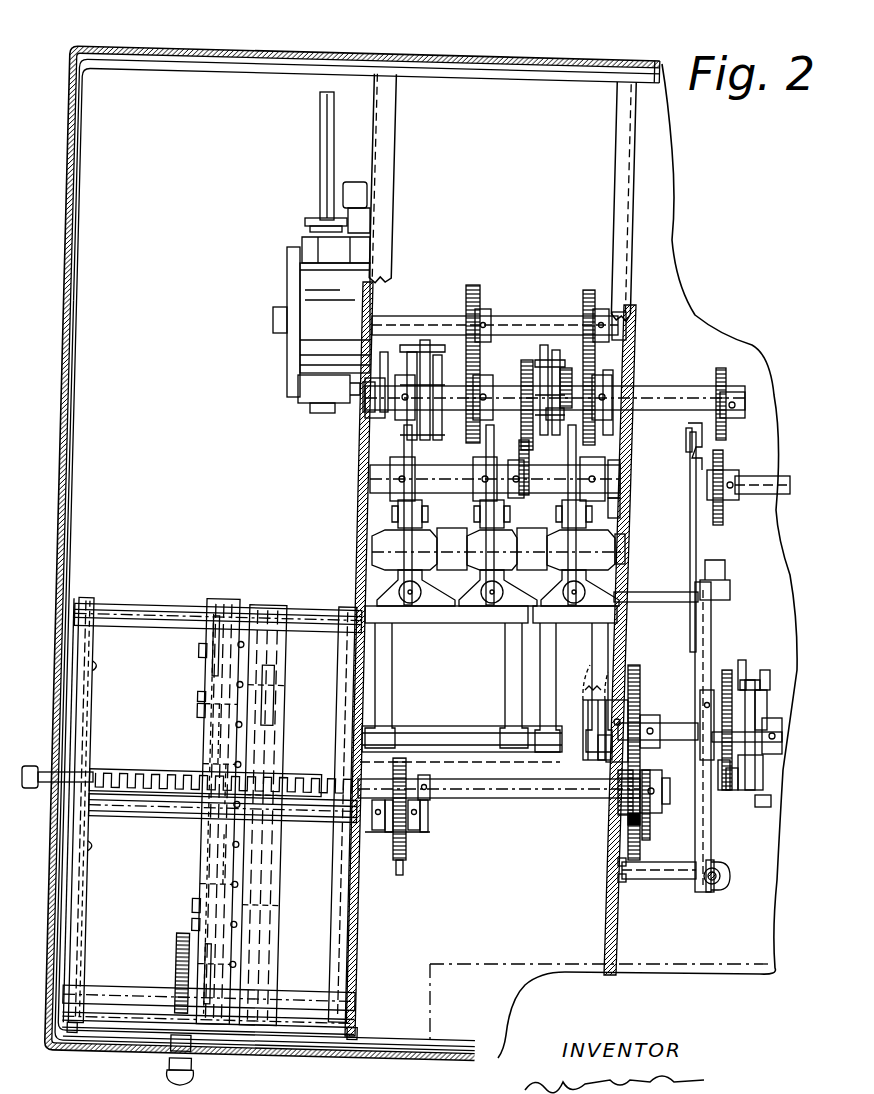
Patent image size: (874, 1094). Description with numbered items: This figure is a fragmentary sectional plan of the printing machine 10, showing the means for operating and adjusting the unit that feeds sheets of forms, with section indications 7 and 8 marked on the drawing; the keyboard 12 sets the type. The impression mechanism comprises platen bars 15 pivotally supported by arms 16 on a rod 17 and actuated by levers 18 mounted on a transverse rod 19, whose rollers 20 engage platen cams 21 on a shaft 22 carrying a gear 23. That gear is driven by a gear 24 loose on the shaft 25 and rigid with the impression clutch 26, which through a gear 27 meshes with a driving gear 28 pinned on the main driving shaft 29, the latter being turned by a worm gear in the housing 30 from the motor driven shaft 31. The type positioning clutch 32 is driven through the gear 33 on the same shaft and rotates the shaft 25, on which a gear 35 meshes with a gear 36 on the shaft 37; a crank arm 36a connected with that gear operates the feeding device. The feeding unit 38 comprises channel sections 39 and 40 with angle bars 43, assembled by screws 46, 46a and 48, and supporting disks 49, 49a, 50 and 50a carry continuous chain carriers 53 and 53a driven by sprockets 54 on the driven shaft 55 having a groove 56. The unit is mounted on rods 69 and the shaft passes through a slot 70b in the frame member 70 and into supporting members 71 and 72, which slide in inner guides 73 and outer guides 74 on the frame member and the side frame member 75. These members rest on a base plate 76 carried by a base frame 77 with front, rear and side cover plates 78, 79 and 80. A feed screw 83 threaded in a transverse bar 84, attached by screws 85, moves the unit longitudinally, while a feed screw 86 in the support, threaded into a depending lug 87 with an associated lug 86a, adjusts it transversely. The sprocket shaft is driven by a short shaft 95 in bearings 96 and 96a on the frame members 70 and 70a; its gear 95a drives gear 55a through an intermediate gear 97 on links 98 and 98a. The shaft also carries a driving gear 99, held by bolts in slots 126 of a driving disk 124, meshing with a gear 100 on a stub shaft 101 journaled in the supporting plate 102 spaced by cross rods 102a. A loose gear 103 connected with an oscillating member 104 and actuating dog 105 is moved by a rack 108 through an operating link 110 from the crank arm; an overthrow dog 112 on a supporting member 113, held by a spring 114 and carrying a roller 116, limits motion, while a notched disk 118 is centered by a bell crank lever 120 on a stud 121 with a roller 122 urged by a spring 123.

The section line 7- 7 is at (793, 945).
The casing frame 8 is at (62, 518).
The printing machine 10 is at (771, 1005).
The keyboard 12 is at (570, 840).
The platen bars 15 is at (455, 623).
The arms 16 is at (392, 673).
The rod 17 is at (466, 724).
The levers 18 is at (378, 578).
The transverse rod 19 is at (372, 540).
The rollers 20 is at (422, 506).
The platen cams 21 is at (420, 470).
The shaft 22 is at (620, 510).
The driving gear 23 is at (524, 500).
The gear 24 is at (521, 370).
The shaft 25 is at (678, 408).
The impression clutch 26 is at (546, 345).
The gear 27 is at (613, 380).
The driving gear 28 is at (594, 300).
The main driving shaft 29 is at (542, 316).
The housing 30 is at (321, 330).
The motor driven shaft 31 is at (320, 149).
The type positioning clutch 32 is at (395, 445).
The driving gear 33 is at (480, 295).
The gear 35 is at (726, 372).
The gear 36 is at (724, 458).
The crank arm 36a is at (698, 460).
The shaft 37 is at (782, 478).
The feeding unit 38 is at (226, 604).
The channel-shaped section 39 is at (284, 740).
The channel-shaped section 40 is at (210, 688).
The angle bar 43 is at (215, 732).
The screw 46 is at (205, 708).
The screw 46a is at (259, 903).
The screw 48 is at (210, 913).
The supporting disk 49 is at (212, 895).
The supporting disk 49a is at (280, 678).
The supporting disk 50 is at (215, 636).
The supporting disk 50a is at (258, 955).
The continuous carrier 53 is at (212, 752).
The continuous carrier 53a is at (270, 887).
The sprocket 54 is at (210, 770).
The driven shaft 55 is at (118, 806).
The gear 55a is at (400, 862).
The groove 56 is at (170, 780).
The rods 69 is at (148, 606).
The frame member 70 is at (360, 932).
The frame member 70a is at (606, 938).
The slot 70b is at (340, 862).
The supporting member 71 is at (335, 876).
The supporting member 72 is at (90, 888).
The inner guides 73 is at (338, 688).
The outer guides 74 is at (90, 720).
The side frame member 75 is at (76, 672).
The base plate 76 is at (670, 970).
The base frame 77 is at (540, 66).
The front cover plate 78 is at (262, 1052).
The rear cover plate 79 is at (235, 46).
The side cover plate 80 is at (66, 311).
The feed screw 83 is at (180, 962).
The transverse bar 84 is at (135, 1030).
The screws 85 is at (76, 1036).
The feed screw 86 is at (57, 761).
The lug 86a is at (216, 850).
The lug 87 is at (213, 876).
The short shaft 95 is at (532, 800).
The gear 95a is at (460, 766).
The bearing 96 is at (376, 790).
The bearing 96a is at (625, 815).
The intermediate gear 97 is at (397, 850).
The link 98 is at (372, 818).
The link 98a is at (430, 800).
The driving gear 99 is at (634, 826).
The gear 100 is at (636, 675).
The stub shaft 101 is at (686, 725).
The supporting plate 102 is at (705, 835).
The cross rods 102a is at (672, 580).
The gear 103 is at (700, 700).
The oscillating member 104 is at (758, 728).
The actuating dog 105 is at (728, 685).
The rack 108 is at (722, 692).
The operating link 110 is at (690, 530).
The overthrow dog 112 is at (775, 804).
The supporting member 113 is at (745, 790).
The spring 114 is at (718, 762).
The roller 116 is at (730, 790).
The disk 118 is at (602, 705).
The bell crank lever 120 is at (594, 760).
The stud 121 is at (592, 763).
The roller 122 is at (604, 790).
The spring 123 is at (585, 688).
The driving disk 124 is at (640, 775).
The slots 126 is at (651, 800).